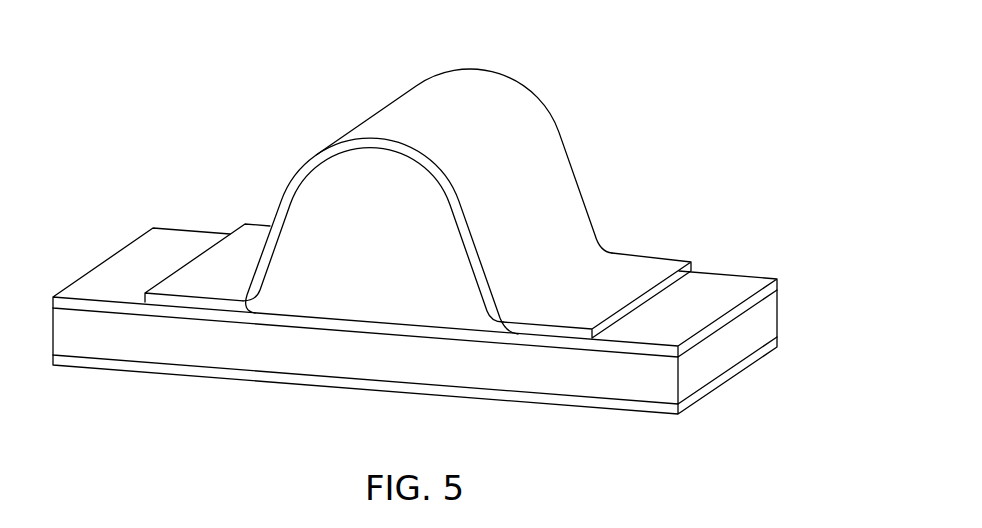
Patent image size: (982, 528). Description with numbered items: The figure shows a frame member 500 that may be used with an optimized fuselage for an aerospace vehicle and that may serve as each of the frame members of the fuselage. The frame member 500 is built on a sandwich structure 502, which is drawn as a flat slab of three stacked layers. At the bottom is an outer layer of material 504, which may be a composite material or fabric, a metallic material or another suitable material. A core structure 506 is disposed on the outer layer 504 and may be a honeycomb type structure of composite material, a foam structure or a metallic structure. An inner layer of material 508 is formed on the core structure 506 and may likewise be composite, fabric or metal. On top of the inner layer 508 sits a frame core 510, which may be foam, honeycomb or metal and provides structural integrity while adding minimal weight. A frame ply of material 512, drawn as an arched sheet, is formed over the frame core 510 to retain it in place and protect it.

The frame member 500 is at (459, 263).
The sandwich structure 502 is at (459, 344).
The outer layer of material 504 is at (612, 411).
The core structure 506 is at (778, 316).
The inner layer of material 508 is at (779, 281).
The frame core 510 is at (293, 303).
The frame ply of material 512 is at (580, 200).